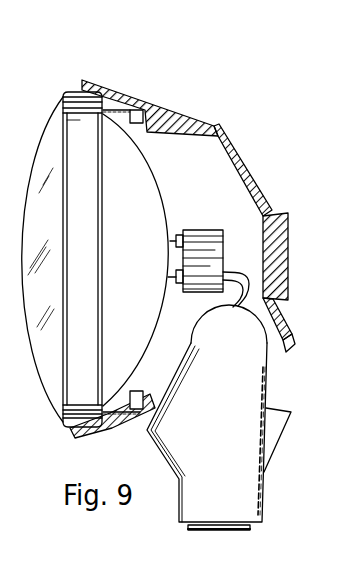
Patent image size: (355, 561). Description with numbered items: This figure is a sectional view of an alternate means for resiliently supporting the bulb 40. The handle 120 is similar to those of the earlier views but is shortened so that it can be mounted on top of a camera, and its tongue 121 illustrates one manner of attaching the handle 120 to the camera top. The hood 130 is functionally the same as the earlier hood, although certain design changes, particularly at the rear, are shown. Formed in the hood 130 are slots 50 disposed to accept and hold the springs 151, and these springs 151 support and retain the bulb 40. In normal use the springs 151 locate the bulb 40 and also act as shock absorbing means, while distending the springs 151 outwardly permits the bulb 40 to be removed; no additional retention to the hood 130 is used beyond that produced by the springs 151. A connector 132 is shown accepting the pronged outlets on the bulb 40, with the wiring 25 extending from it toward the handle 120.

The lamp wires 25 is at (242, 281).
The bulb 40 is at (137, 198).
The formed slots 50 is at (149, 365).
The handle 120 is at (218, 461).
The tongue 121 is at (220, 531).
The hood 130 is at (172, 113).
The connector 132 is at (189, 230).
The springs 151 is at (117, 96).